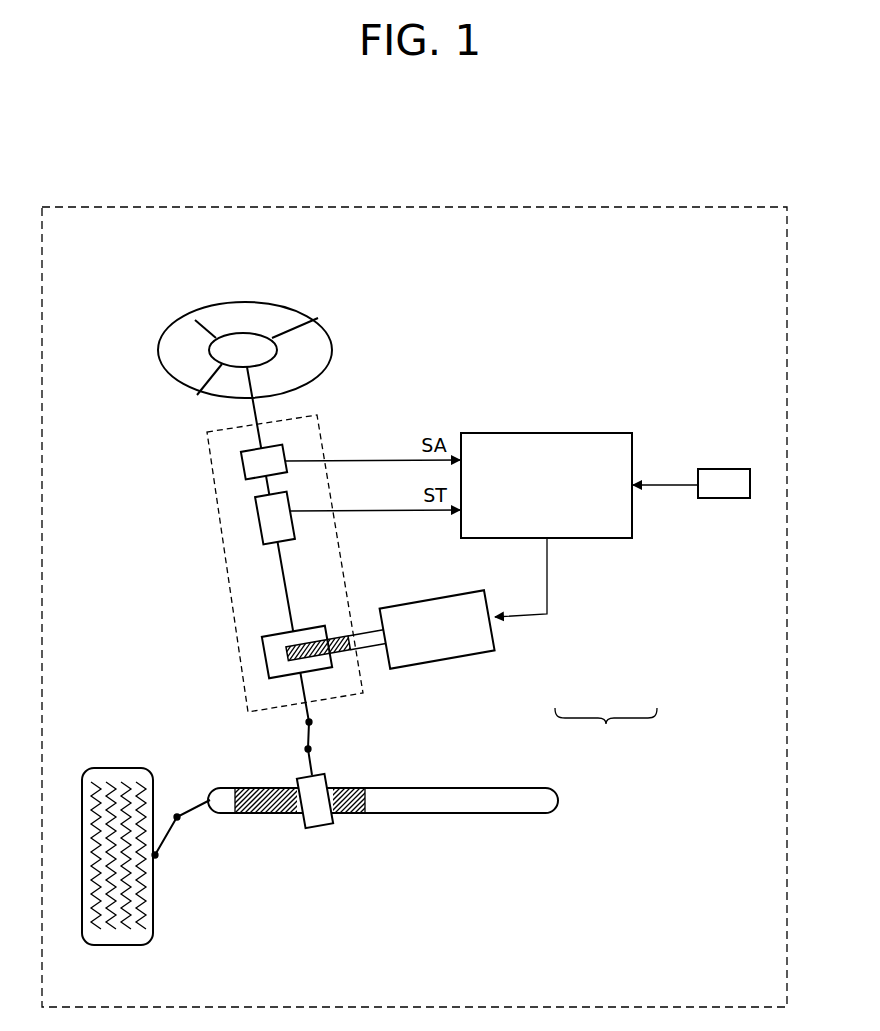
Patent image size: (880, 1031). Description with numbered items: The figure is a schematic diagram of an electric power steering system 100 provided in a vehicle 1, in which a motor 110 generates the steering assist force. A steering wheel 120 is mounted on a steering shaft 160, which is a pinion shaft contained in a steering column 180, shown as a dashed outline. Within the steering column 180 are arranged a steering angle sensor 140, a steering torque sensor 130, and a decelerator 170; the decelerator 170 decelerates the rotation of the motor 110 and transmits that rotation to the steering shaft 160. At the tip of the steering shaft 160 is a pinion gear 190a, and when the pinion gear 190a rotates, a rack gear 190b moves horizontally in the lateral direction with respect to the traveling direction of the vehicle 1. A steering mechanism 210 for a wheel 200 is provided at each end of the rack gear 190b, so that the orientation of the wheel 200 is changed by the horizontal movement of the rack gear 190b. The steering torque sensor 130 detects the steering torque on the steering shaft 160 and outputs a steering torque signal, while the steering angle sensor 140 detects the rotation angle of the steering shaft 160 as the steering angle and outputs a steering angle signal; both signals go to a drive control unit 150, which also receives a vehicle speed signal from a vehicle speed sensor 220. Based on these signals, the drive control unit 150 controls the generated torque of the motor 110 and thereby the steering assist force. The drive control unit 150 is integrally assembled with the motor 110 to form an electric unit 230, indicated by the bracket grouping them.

The vehicle 1 is at (530, 207).
The electric power steering system 100 is at (452, 350).
The motor 110 is at (483, 655).
The steering wheel 120 is at (232, 303).
The steering torque sensor 130 is at (257, 528).
The steering angle sensor 140 is at (243, 470).
The drive control unit 150 is at (574, 538).
The steering shaft 160 is at (285, 592).
The decelerator 170 is at (265, 657).
The steering column 180 is at (330, 703).
The pinion gear 190a is at (312, 830).
The rack gear 190b is at (445, 788).
The wheel 200 is at (125, 766).
The steering mechanism 210 is at (162, 863).
The vehicle speed sensor 220 is at (720, 469).
The electric unit 230 is at (606, 731).